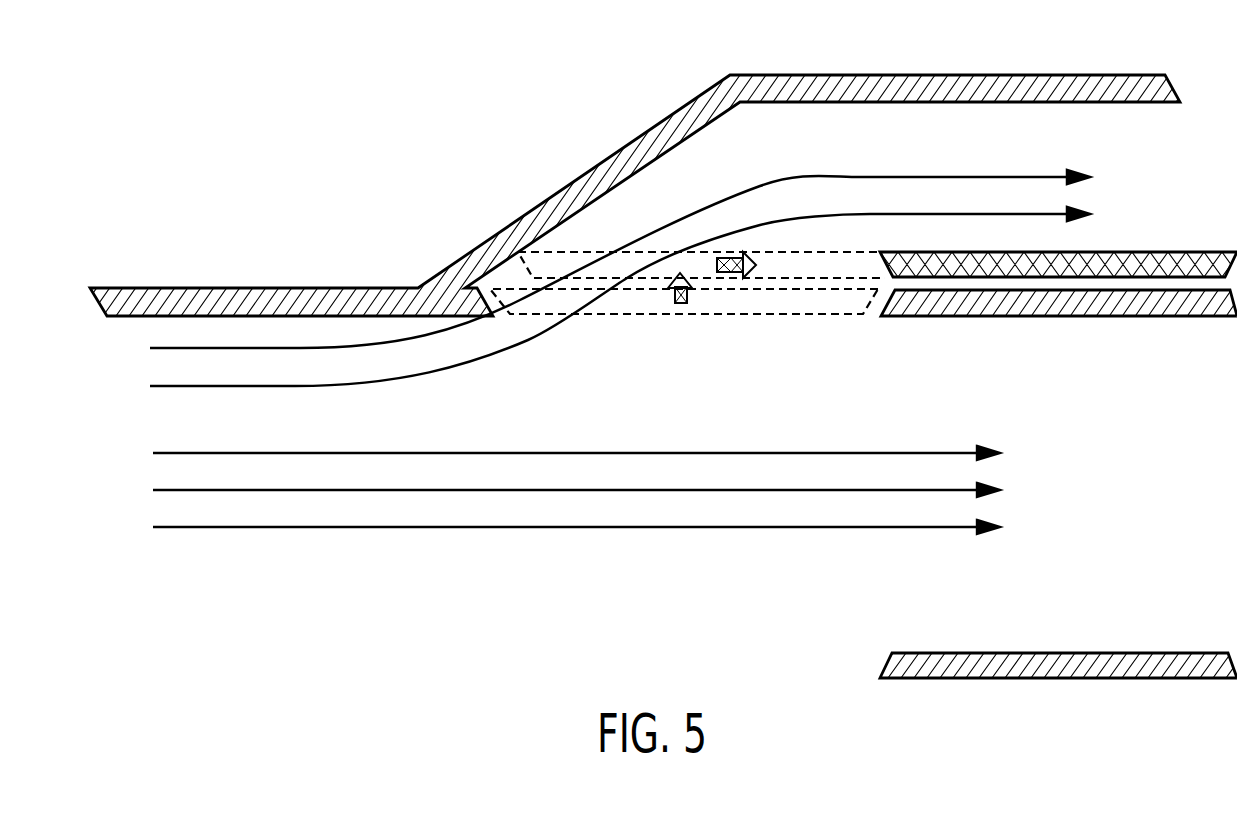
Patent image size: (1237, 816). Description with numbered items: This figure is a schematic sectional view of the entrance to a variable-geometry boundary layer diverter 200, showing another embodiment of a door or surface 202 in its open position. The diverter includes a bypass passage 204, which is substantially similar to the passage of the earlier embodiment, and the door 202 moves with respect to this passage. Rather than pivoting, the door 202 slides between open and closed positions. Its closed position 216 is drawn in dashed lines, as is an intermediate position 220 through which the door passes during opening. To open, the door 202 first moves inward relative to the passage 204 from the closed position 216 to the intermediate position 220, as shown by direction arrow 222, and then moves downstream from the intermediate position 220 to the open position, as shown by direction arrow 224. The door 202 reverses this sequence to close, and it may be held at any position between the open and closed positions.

The variable-geometry boundary layer diverter 200 is at (196, 143).
The door 202 is at (1163, 262).
The bypass passage 204 is at (933, 145).
The closed position 216 is at (761, 318).
The intermediate position 220 is at (590, 250).
The direction arrow 222 is at (676, 304).
The direction arrow 224 is at (733, 268).